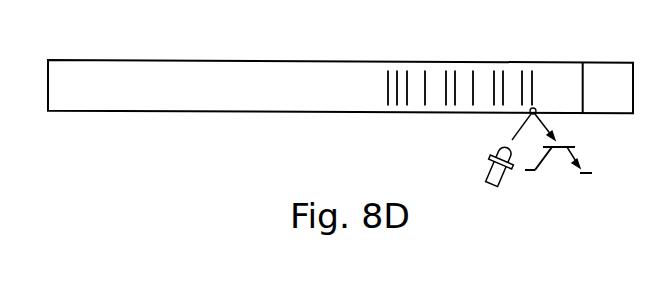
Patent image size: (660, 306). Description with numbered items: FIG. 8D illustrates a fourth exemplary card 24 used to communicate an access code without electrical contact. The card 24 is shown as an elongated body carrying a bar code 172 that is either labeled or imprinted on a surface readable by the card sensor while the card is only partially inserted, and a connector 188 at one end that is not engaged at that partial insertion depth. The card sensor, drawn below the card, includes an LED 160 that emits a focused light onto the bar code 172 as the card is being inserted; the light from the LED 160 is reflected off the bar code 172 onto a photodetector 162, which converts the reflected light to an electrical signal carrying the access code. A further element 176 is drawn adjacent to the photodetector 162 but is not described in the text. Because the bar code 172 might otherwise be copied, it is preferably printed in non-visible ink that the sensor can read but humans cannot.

The fourth exemplary card 24 is at (355, 100).
The bar code 172 is at (488, 61).
The connector 188 is at (603, 62).
The LED 160 is at (497, 148).
The photodetector 162 is at (553, 127).
The reflector 176 is at (588, 174).